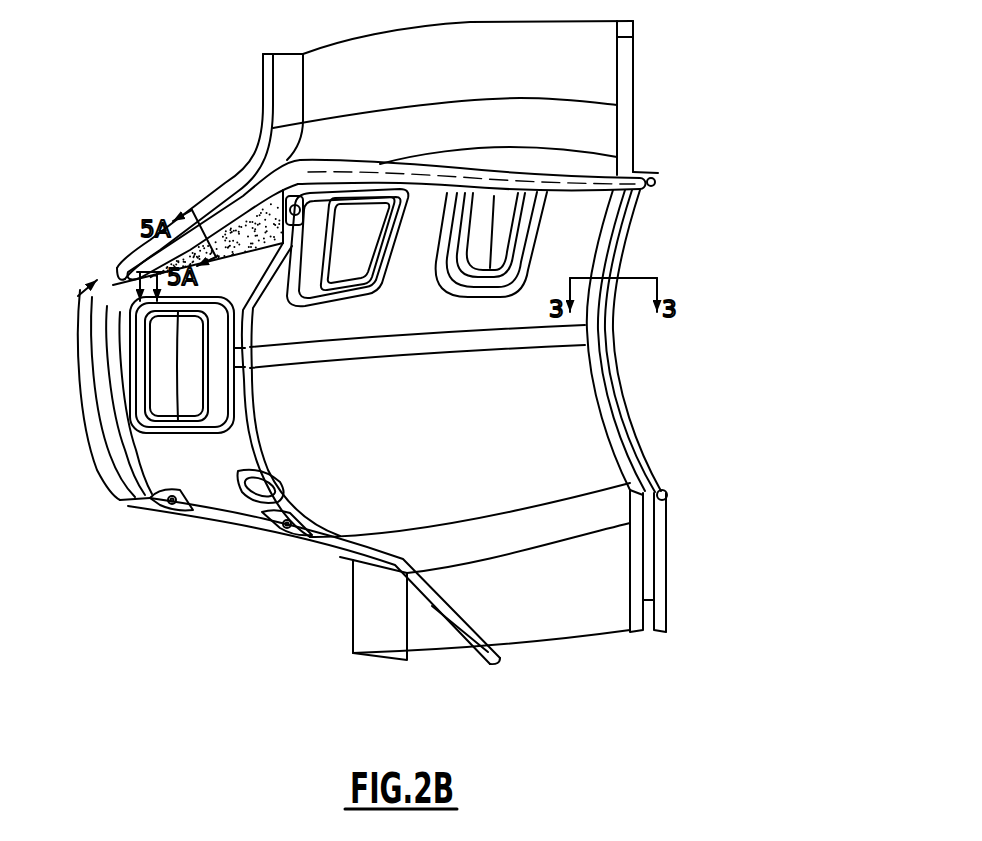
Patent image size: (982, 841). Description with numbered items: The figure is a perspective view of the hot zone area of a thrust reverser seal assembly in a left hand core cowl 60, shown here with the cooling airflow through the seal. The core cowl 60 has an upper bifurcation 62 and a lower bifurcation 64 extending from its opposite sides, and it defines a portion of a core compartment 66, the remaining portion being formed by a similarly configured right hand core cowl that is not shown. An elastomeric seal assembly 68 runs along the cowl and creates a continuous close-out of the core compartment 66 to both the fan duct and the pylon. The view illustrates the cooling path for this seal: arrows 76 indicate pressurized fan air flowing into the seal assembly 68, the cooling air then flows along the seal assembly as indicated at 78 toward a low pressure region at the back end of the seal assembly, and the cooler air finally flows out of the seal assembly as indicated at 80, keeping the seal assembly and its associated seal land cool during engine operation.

The left hand core cowl 60 is at (740, 90).
The upper bifurcation 62 is at (337, 47).
The lower bifurcation 64 is at (668, 598).
The core compartment 66 is at (352, 503).
The elastomeric seal assembly 68 is at (270, 177).
The arrows indicating pressurized fan air 76 is at (621, 248).
The cooling air flow along the seal assembly 78 is at (346, 160).
The cooler air flowing out of the seal assembly 80 is at (112, 270).